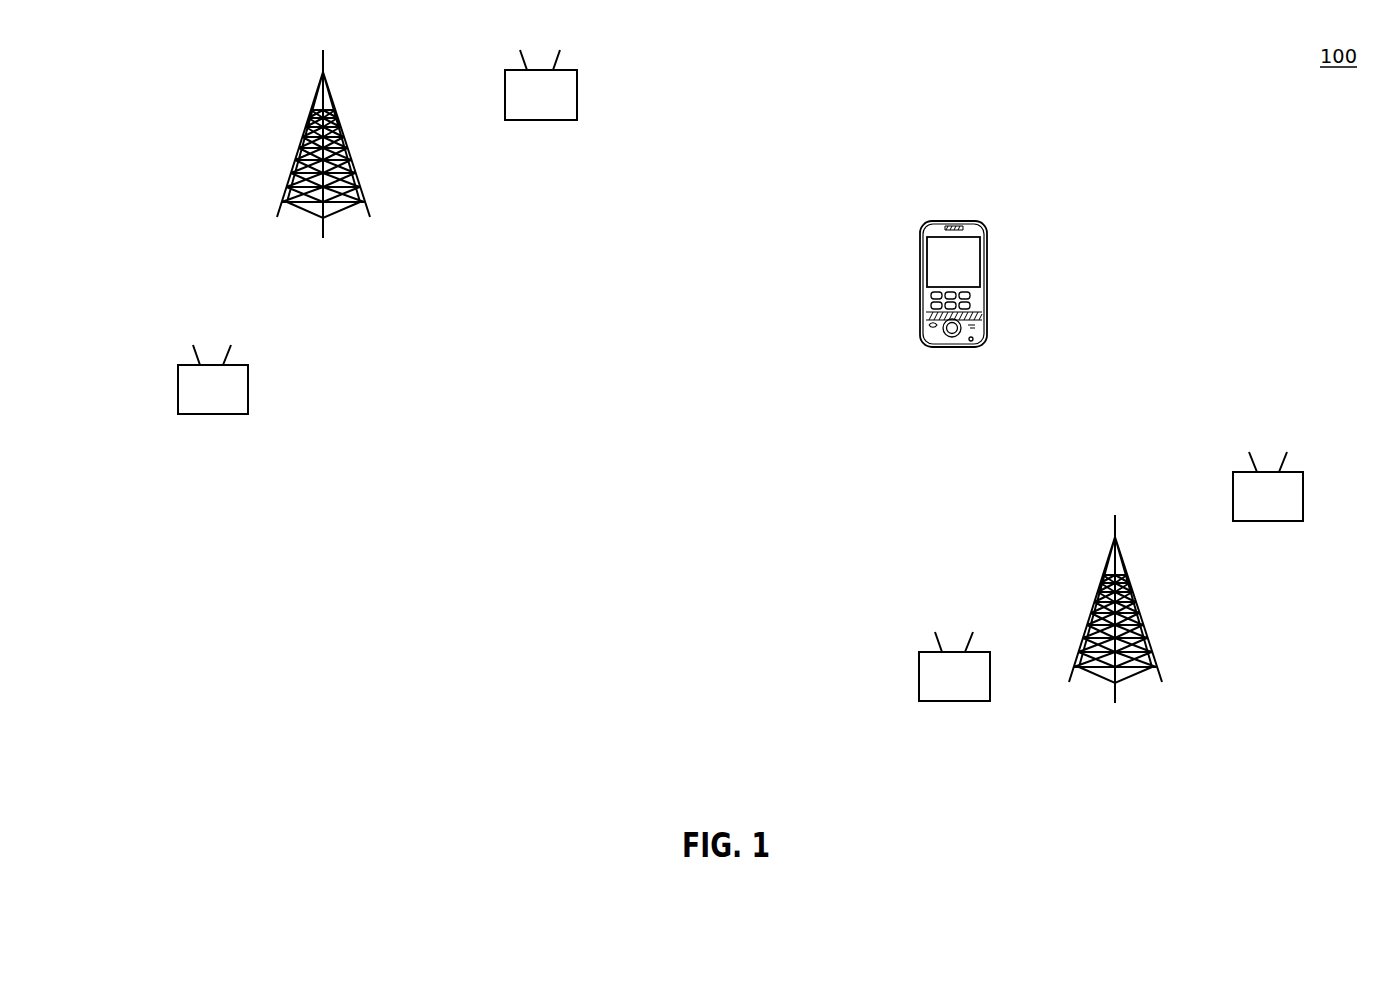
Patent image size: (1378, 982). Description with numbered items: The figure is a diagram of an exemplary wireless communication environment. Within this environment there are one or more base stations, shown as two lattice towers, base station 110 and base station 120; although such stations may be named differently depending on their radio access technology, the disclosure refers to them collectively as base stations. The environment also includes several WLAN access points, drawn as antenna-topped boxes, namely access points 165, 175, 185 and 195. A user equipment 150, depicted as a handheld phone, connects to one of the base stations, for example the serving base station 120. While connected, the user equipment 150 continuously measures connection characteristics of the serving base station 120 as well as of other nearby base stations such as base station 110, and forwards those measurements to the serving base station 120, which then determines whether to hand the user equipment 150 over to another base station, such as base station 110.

The base station 110 is at (346, 127).
The base station 120 is at (1135, 592).
The user equipment 150 is at (988, 270).
The access point 165 is at (248, 383).
The access point 175 is at (577, 88).
The access point 185 is at (919, 675).
The access point 195 is at (1233, 495).